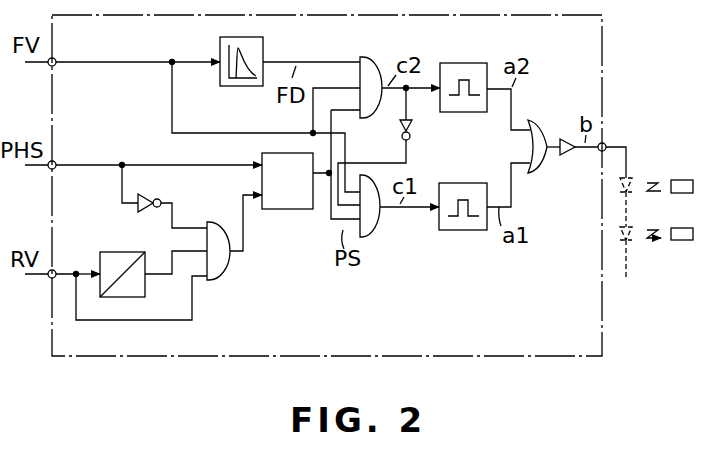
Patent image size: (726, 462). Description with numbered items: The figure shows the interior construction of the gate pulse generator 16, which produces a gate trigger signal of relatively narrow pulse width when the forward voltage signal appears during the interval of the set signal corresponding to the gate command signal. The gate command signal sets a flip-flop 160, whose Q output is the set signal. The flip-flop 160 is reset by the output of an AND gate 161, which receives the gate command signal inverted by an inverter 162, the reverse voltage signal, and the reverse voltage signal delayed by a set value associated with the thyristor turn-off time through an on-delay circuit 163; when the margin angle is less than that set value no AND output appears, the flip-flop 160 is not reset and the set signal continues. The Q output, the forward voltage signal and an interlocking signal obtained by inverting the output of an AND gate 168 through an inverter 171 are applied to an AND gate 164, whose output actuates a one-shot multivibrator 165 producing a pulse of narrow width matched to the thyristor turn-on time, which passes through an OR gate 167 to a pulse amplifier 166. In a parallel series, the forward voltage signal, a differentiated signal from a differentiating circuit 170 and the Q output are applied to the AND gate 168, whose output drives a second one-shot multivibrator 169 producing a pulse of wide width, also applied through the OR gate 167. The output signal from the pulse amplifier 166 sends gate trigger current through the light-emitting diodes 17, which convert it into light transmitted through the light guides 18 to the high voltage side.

The gate pulse generator 16 is at (603, 320).
The light-emitting diode 17 is at (634, 257).
The light guide 18 is at (678, 257).
The flip-flop 160 is at (290, 210).
The AND gate 161 is at (222, 275).
The inverter 162 is at (147, 195).
The on-delay circuit 163 is at (130, 297).
The AND gate 164 is at (372, 228).
The one-shot multivibrator 165 is at (466, 232).
The pulse amplifier 166 is at (566, 155).
The OR gate 167 is at (545, 122).
The AND gate 168 is at (380, 55).
The second one-shot multivibrator 169 is at (460, 112).
The differentiating circuit 170 is at (265, 50).
The inverter 171 is at (400, 123).